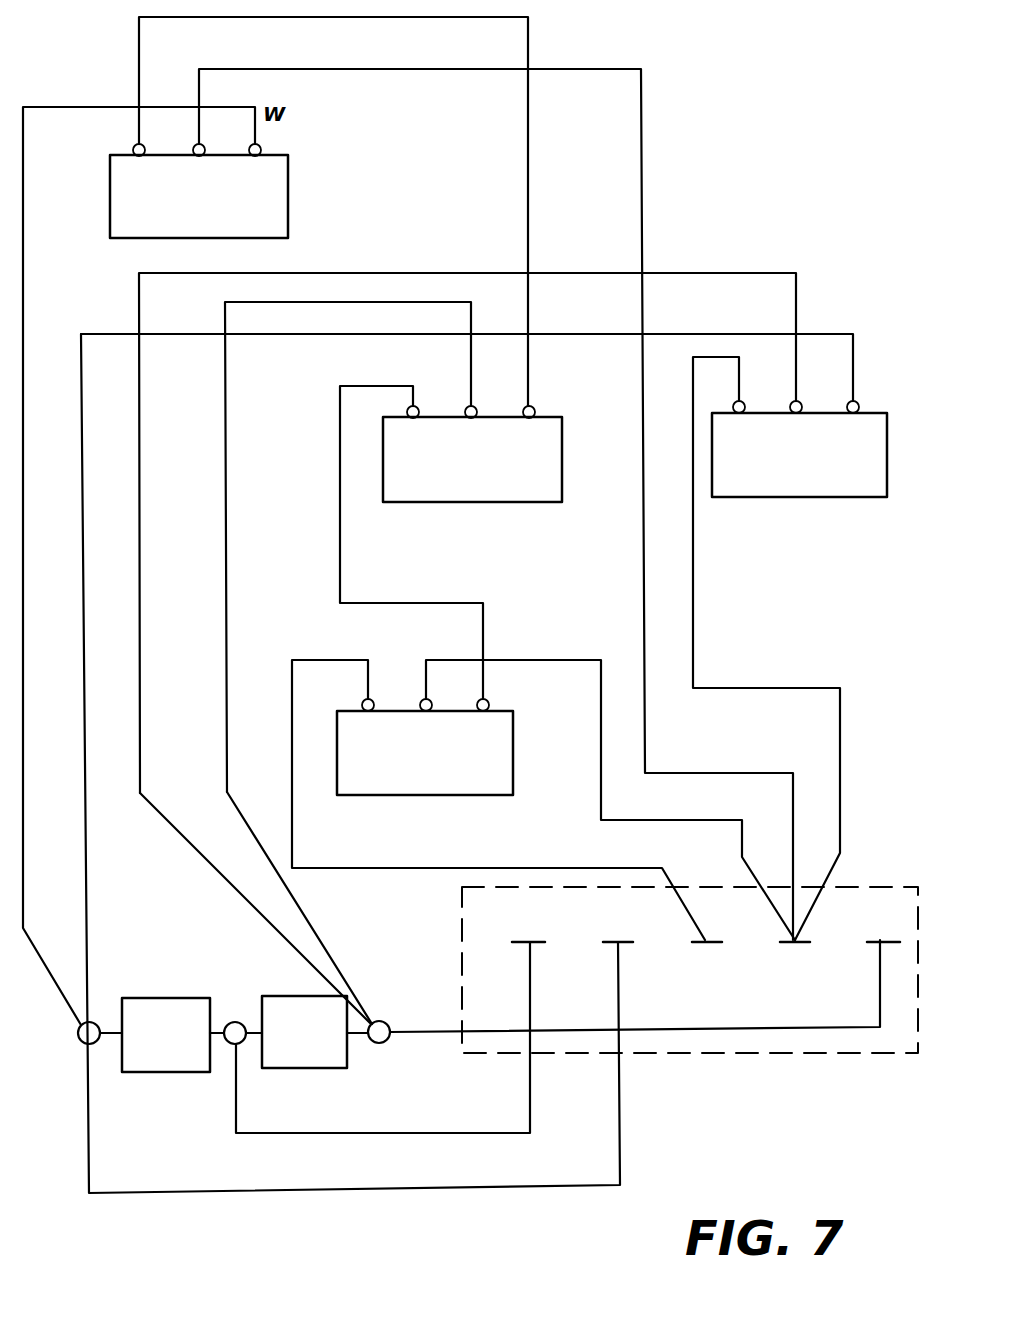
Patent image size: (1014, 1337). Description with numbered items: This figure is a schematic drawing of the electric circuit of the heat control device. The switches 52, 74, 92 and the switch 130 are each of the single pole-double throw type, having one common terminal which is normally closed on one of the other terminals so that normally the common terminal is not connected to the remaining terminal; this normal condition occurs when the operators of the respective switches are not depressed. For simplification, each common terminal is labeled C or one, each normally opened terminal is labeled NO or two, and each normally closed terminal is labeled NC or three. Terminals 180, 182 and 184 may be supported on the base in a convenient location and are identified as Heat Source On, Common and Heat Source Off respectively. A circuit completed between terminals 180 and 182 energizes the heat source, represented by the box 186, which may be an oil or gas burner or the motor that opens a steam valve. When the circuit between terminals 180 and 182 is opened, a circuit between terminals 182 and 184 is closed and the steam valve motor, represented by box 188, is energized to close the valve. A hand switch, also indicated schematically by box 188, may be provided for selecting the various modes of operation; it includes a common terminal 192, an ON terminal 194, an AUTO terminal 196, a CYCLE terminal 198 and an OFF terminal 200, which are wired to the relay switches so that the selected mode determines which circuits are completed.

The switch 52 is at (288, 187).
The switch 74 is at (507, 492).
The switch 92 is at (823, 485).
The relay 130 is at (495, 752).
The Heat Source On terminal 180 is at (78, 1033).
The Common terminal 182 is at (237, 1022).
The Heat Source Off terminal 184 is at (387, 1022).
The heat source 186 is at (166, 997).
The hand switch 188 is at (312, 996).
The common terminal 192 is at (522, 942).
The ON terminal 194 is at (610, 942).
The AUTO terminal 196 is at (712, 942).
The CYCLE terminal 198 is at (802, 940).
The OFF terminal 200 is at (884, 940).